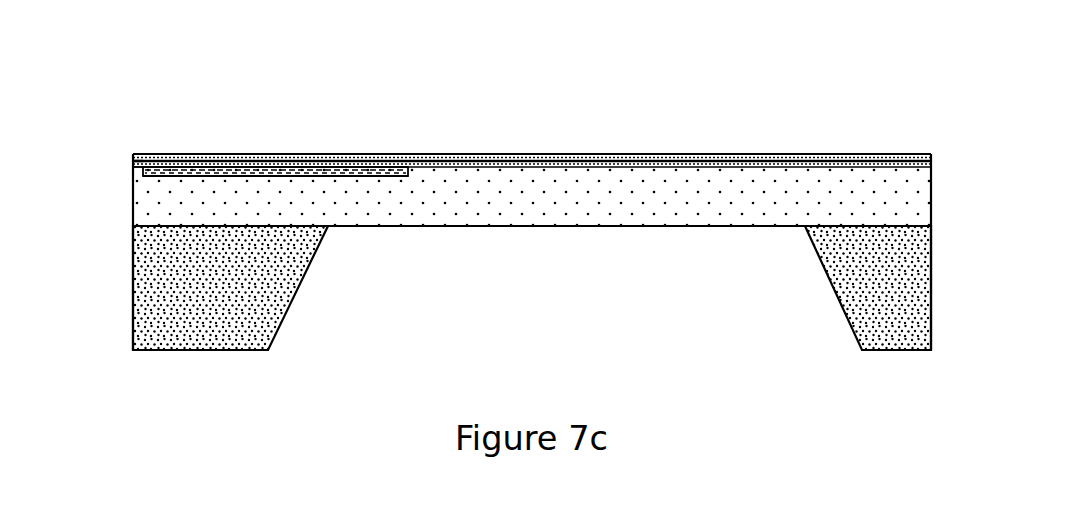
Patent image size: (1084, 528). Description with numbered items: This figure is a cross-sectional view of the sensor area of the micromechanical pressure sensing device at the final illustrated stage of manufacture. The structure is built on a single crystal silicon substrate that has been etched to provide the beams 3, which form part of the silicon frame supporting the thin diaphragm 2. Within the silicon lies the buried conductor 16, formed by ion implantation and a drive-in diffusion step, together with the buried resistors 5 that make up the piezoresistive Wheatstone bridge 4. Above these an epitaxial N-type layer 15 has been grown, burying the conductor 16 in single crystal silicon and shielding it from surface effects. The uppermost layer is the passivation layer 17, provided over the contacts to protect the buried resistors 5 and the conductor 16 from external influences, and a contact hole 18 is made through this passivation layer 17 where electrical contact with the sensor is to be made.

The diaphragm 2 is at (542, 157).
The silicon beam 3 is at (737, 190).
The piezoresistive Wheatstone bridge 4 is at (275, 103).
The resistor 5 is at (383, 172).
The epitaxial layer 15 is at (470, 159).
The buried conductor 16 is at (155, 167).
The passivation layer 17 is at (632, 153).
The contact hole 18 is at (133, 163).